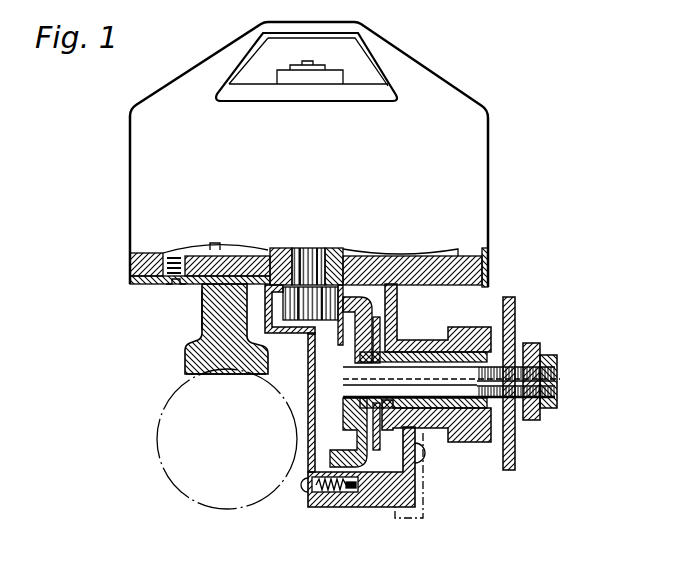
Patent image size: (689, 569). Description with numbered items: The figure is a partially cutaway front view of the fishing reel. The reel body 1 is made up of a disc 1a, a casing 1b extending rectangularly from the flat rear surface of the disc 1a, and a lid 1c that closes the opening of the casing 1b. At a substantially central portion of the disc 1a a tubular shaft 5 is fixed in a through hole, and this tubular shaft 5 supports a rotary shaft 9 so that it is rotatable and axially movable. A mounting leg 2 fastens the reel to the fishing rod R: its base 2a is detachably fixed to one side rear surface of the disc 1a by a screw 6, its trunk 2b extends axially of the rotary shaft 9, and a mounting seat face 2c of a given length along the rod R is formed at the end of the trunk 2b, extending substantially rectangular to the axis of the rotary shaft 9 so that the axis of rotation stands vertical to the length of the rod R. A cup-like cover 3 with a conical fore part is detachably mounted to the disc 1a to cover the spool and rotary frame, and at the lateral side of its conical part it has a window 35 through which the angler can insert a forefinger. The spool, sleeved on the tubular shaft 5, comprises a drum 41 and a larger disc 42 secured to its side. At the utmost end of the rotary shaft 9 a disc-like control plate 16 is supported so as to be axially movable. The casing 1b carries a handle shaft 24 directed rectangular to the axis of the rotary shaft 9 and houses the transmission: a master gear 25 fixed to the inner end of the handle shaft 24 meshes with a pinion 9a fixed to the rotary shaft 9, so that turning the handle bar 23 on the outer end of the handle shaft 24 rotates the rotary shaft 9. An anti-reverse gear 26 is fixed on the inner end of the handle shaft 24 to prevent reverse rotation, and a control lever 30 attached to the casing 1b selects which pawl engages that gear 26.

The reel body 1 is at (314, 512).
The disc 1a is at (437, 285).
The casing 1b is at (370, 493).
The lid 1c is at (317, 342).
The mounting leg 2 is at (202, 328).
The base 2a is at (130, 278).
The trunk 2b is at (203, 302).
The mounting seat face 2c is at (218, 371).
The cover 3 is at (470, 156).
The tubular shaft 5 is at (337, 250).
The screw 6 is at (165, 284).
The rotary shaft 9 is at (305, 262).
The pinion 9a is at (300, 300).
The control plate 16 is at (365, 96).
The handle bar 23 is at (533, 343).
The handle shaft 24 is at (495, 420).
The master gear 25 is at (299, 477).
The anti-reverse gear 26 is at (352, 507).
The control lever 30 is at (423, 497).
The window 35 is at (378, 63).
The drum 41 is at (205, 249).
The disc 42 is at (188, 253).
The fishing rod R is at (160, 465).